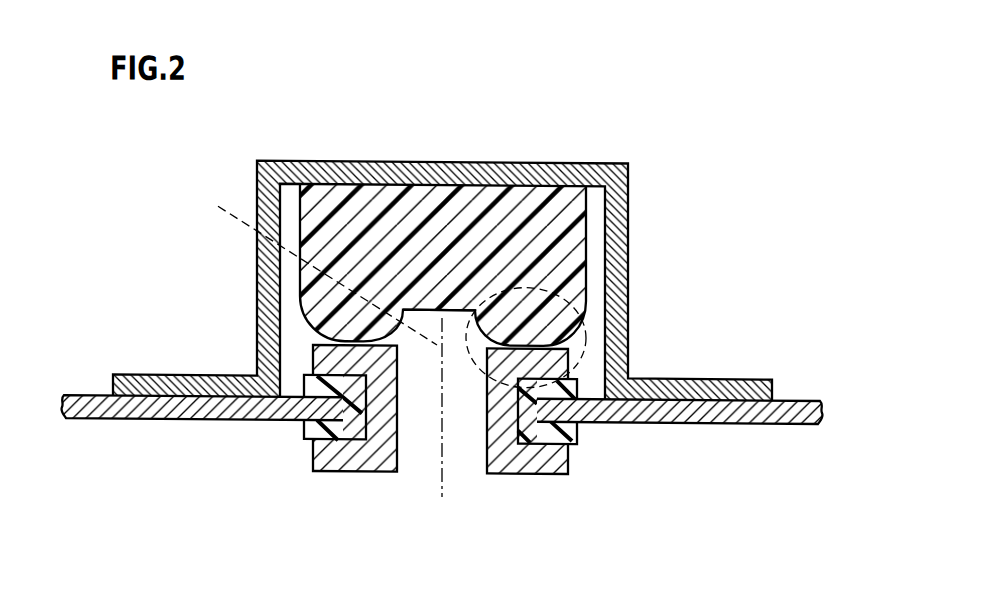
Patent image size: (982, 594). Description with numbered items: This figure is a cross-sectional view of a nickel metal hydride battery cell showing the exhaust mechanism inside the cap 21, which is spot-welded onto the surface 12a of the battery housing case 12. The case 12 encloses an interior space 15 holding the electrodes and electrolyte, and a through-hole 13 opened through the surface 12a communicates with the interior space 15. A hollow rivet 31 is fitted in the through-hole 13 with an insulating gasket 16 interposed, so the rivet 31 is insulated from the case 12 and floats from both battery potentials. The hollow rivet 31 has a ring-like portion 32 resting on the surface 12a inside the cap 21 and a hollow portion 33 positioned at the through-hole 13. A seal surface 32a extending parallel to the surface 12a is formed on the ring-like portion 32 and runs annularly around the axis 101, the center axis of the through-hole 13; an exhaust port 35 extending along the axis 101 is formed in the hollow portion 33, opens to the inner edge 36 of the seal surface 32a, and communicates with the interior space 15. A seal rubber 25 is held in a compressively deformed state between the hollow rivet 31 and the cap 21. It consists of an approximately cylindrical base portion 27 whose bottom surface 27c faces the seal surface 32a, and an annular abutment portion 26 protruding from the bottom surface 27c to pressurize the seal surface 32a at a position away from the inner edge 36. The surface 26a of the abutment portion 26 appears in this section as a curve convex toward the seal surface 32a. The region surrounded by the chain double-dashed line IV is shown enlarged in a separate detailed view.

The cap 21 is at (330, 175).
The seal rubber 25 is at (566, 180).
The base portion 27 is at (518, 214).
The bottom surface 27c is at (432, 311).
The axis 101 is at (308, 269).
The abutment portion 26 is at (335, 322).
The surface 26a is at (332, 345).
The surface 12a is at (90, 396).
The battery housing case 12 is at (750, 408).
The interior space 15 is at (755, 458).
The through-hole 13 is at (363, 423).
The hollow portion 33 is at (503, 423).
The insulating gasket 16 is at (333, 432).
The inner edge 36 is at (403, 348).
The exhaust port 35 is at (485, 356).
The chain double-dashed line IV is at (585, 283).
The seal surface 32a is at (577, 356).
The ring-like portion 32 is at (560, 366).
The hollow rivet 31 is at (574, 484).